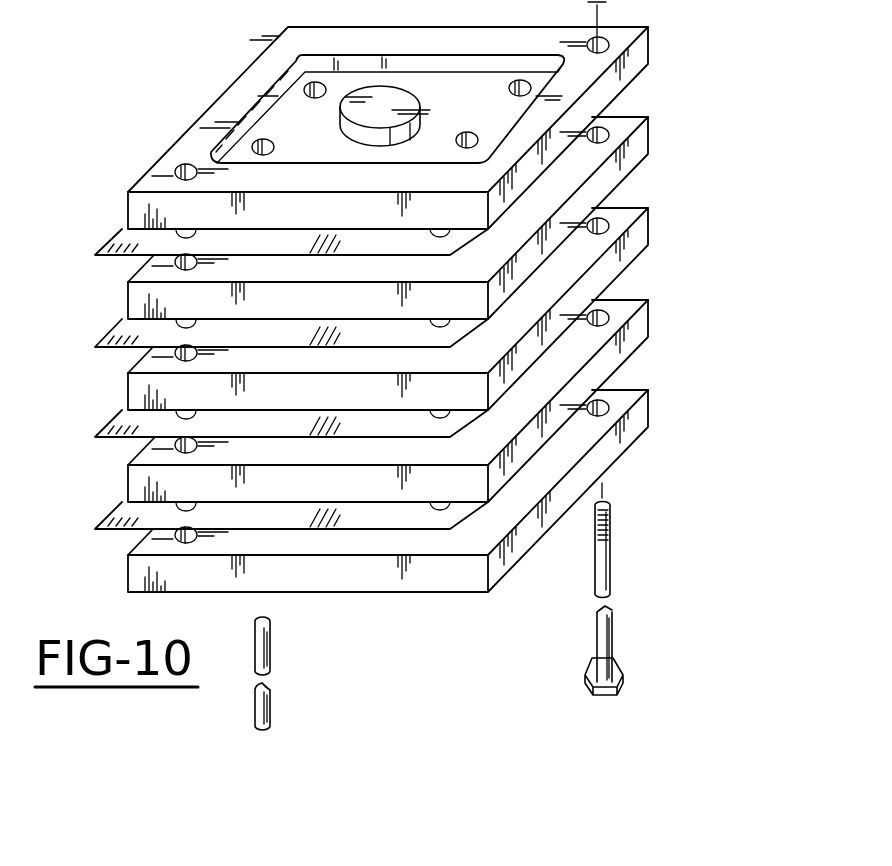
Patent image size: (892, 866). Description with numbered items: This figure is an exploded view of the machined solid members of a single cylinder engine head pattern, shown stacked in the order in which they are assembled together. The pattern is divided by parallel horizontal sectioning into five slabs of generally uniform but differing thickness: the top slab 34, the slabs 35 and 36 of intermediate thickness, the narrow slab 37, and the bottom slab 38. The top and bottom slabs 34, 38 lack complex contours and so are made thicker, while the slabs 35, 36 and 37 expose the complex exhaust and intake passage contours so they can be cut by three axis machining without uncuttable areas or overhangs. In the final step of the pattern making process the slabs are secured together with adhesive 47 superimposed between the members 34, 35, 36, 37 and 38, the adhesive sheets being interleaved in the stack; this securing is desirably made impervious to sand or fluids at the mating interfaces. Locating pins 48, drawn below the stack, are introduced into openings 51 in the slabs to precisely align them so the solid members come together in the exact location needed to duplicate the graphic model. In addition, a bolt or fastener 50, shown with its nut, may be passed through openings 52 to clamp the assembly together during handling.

The top slab 34 is at (372, 115).
The slab 35 is at (128, 300).
The slab 36 is at (128, 393).
The slab 37 is at (128, 482).
The bottom slab 38 is at (128, 575).
The adhesive 47 is at (94, 253).
The locating pin 48 is at (272, 651).
The bolt 50 is at (611, 556).
The opening 51 is at (273, 139).
The opening 52 is at (603, 410).